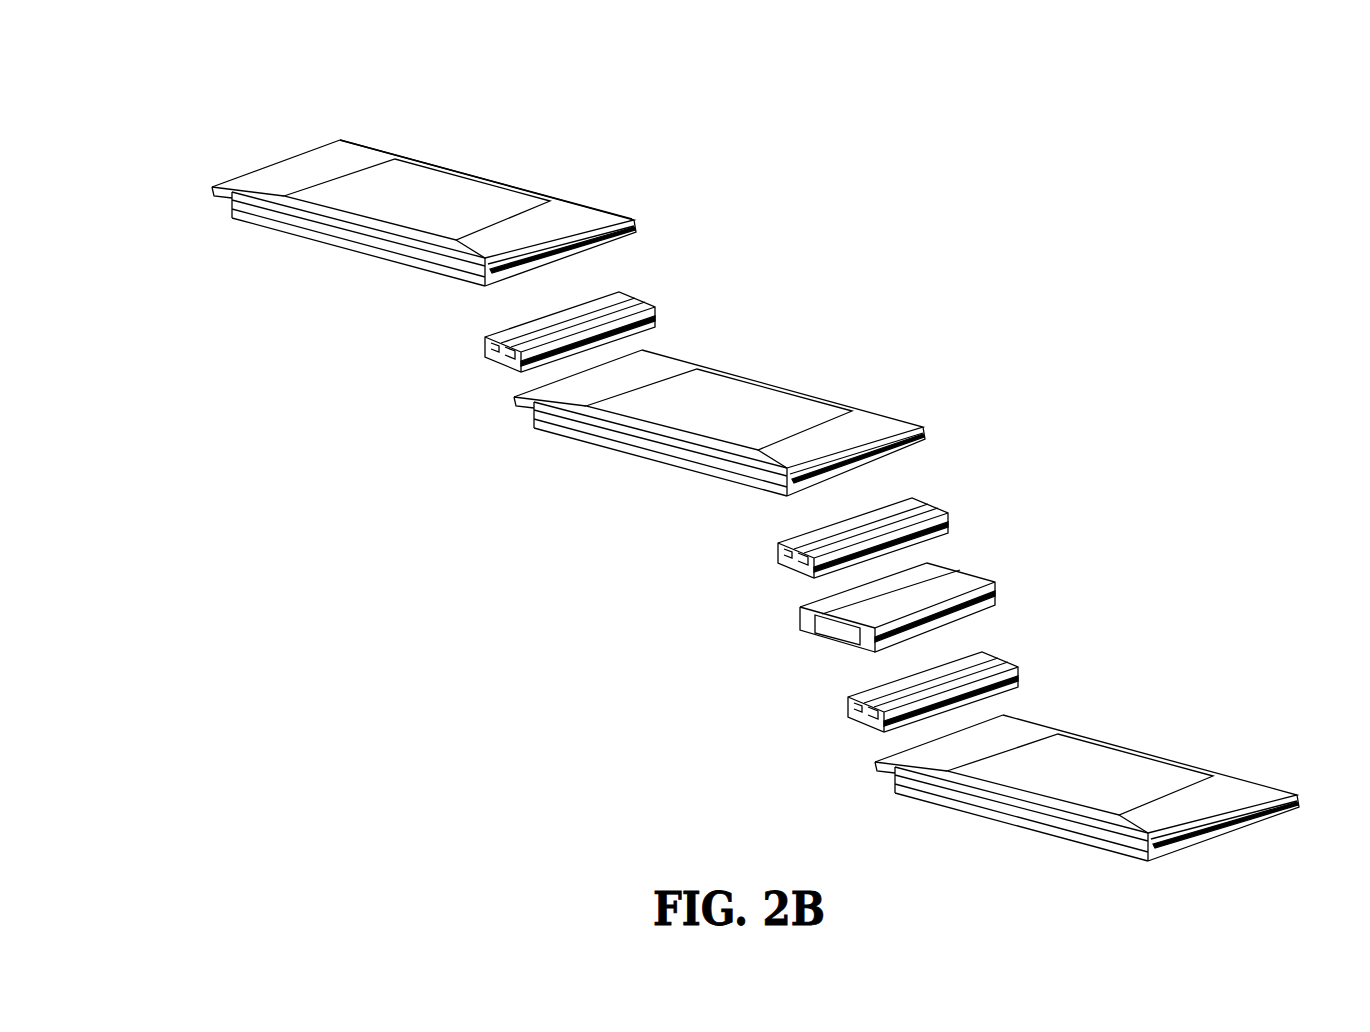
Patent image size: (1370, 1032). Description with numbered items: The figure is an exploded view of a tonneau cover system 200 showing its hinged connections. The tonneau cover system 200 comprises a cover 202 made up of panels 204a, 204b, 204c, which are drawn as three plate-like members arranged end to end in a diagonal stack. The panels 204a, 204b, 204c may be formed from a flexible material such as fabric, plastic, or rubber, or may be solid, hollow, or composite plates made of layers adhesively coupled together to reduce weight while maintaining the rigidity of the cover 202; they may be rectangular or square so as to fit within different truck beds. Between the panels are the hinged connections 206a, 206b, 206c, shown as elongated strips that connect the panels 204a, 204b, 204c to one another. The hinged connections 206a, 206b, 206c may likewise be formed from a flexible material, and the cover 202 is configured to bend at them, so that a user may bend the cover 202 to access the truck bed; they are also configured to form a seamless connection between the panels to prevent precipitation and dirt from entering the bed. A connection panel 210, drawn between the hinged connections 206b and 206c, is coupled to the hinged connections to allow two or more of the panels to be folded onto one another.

The tonneau cover system 200 is at (238, 98).
The cover 202 is at (497, 178).
The panel 204a is at (533, 198).
The panel 204b is at (790, 387).
The panel 204c is at (1140, 750).
The hinged connection 206a is at (647, 293).
The hinged connection 206b is at (933, 497).
The hinged connection 206c is at (1007, 653).
The connection panel 210 is at (967, 570).